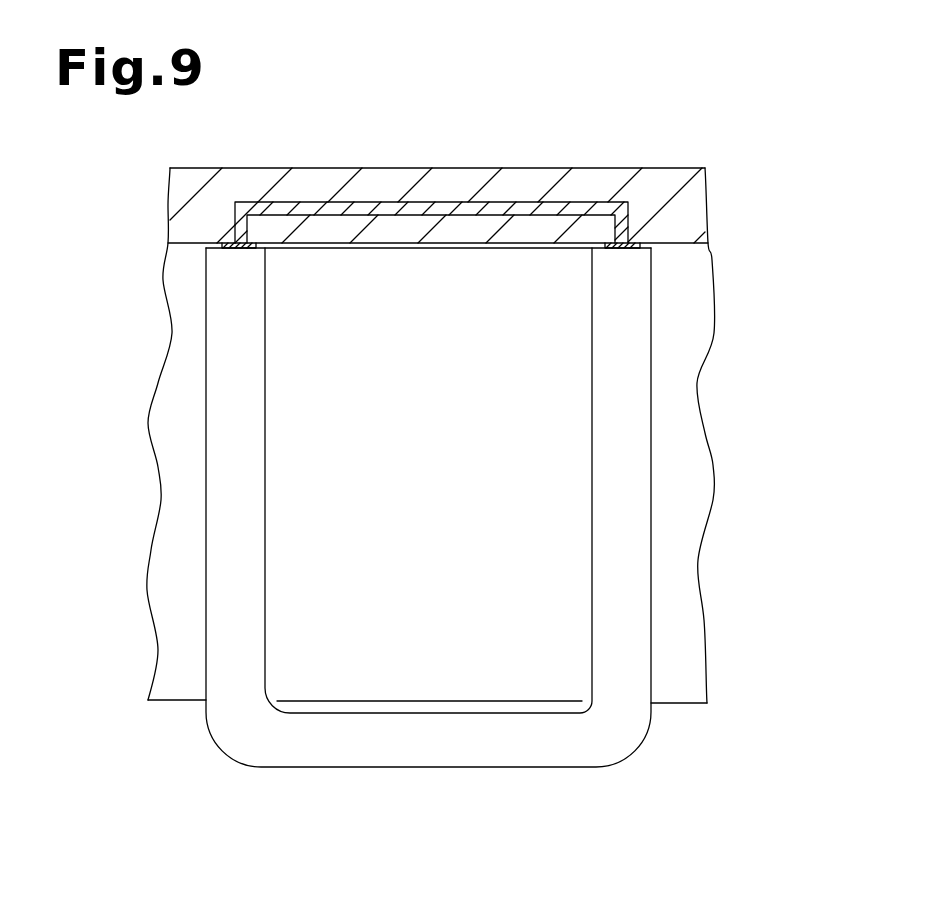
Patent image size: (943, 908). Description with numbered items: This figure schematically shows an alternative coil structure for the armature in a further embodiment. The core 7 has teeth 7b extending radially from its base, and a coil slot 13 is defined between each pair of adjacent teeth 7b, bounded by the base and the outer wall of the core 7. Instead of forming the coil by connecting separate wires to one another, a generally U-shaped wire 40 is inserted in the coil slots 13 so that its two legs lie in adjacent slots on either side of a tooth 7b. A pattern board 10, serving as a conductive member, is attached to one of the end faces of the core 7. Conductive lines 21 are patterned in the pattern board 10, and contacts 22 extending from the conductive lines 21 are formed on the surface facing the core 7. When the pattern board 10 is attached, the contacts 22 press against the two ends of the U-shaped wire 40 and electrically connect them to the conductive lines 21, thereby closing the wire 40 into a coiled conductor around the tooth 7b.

The core 7 is at (718, 658).
The teeth 7b is at (423, 695).
The pattern board 10 is at (647, 155).
The coil slot 13 is at (160, 562).
The conductive lines 21 is at (432, 200).
The contacts 22 is at (240, 249).
The U-shaped wire 40 is at (640, 577).